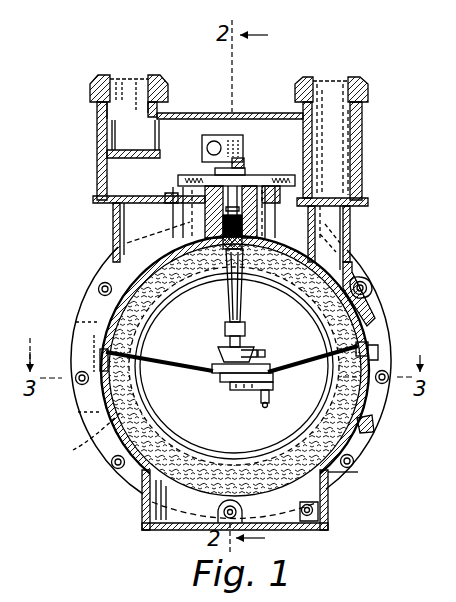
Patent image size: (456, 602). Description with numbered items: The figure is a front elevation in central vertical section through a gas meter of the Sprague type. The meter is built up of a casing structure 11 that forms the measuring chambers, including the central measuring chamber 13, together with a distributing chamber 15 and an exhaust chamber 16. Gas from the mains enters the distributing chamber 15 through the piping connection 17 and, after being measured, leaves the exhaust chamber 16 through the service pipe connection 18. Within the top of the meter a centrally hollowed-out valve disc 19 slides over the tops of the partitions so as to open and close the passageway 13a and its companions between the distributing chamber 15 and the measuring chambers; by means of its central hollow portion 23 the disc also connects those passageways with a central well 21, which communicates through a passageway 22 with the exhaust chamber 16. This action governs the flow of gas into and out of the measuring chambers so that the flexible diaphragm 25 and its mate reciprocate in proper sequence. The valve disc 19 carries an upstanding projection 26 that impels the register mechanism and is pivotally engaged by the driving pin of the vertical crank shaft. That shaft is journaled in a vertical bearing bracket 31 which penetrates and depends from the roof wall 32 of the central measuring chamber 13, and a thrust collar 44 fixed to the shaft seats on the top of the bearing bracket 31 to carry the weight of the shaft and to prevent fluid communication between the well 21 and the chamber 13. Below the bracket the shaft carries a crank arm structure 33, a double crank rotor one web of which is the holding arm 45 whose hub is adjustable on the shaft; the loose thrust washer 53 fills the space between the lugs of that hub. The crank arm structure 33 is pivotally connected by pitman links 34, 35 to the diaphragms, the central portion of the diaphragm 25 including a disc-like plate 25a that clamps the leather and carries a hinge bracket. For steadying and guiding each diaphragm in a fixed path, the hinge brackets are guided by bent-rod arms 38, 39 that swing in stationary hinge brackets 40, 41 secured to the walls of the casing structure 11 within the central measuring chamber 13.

The casing structure 11 is at (368, 330).
The measuring chamber 13 is at (370, 420).
The passageway 13a is at (188, 175).
The distributing chamber 15 is at (133, 155).
The exhaust chamber 16 is at (316, 226).
The piping connection to the mains 17 is at (106, 76).
The service pipe connection 18 is at (368, 92).
The valve disc 19 is at (272, 175).
The central well 21 is at (258, 168).
The passageway 22 is at (318, 229).
The central hollow portion 23 is at (282, 186).
The flexible diaphragm 25 is at (120, 406).
The disc-like plate 25a is at (73, 440).
The upstanding projection 26 is at (247, 172).
The vertical bearing bracket 31 is at (232, 306).
The roof wall 32 is at (226, 290).
The crank arm structure 33 is at (267, 352).
The pitman link 34 is at (213, 372).
The pitman link 35 is at (243, 384).
The bent-rod arm 38 is at (178, 368).
The bent-rod arm 39 is at (296, 364).
The stationary hinge bracket 40 is at (100, 353).
The stationary hinge bracket 41 is at (385, 384).
The thrust collar 44 is at (243, 312).
The holding arm 45 is at (222, 352).
The thrust washer 53 is at (261, 400).